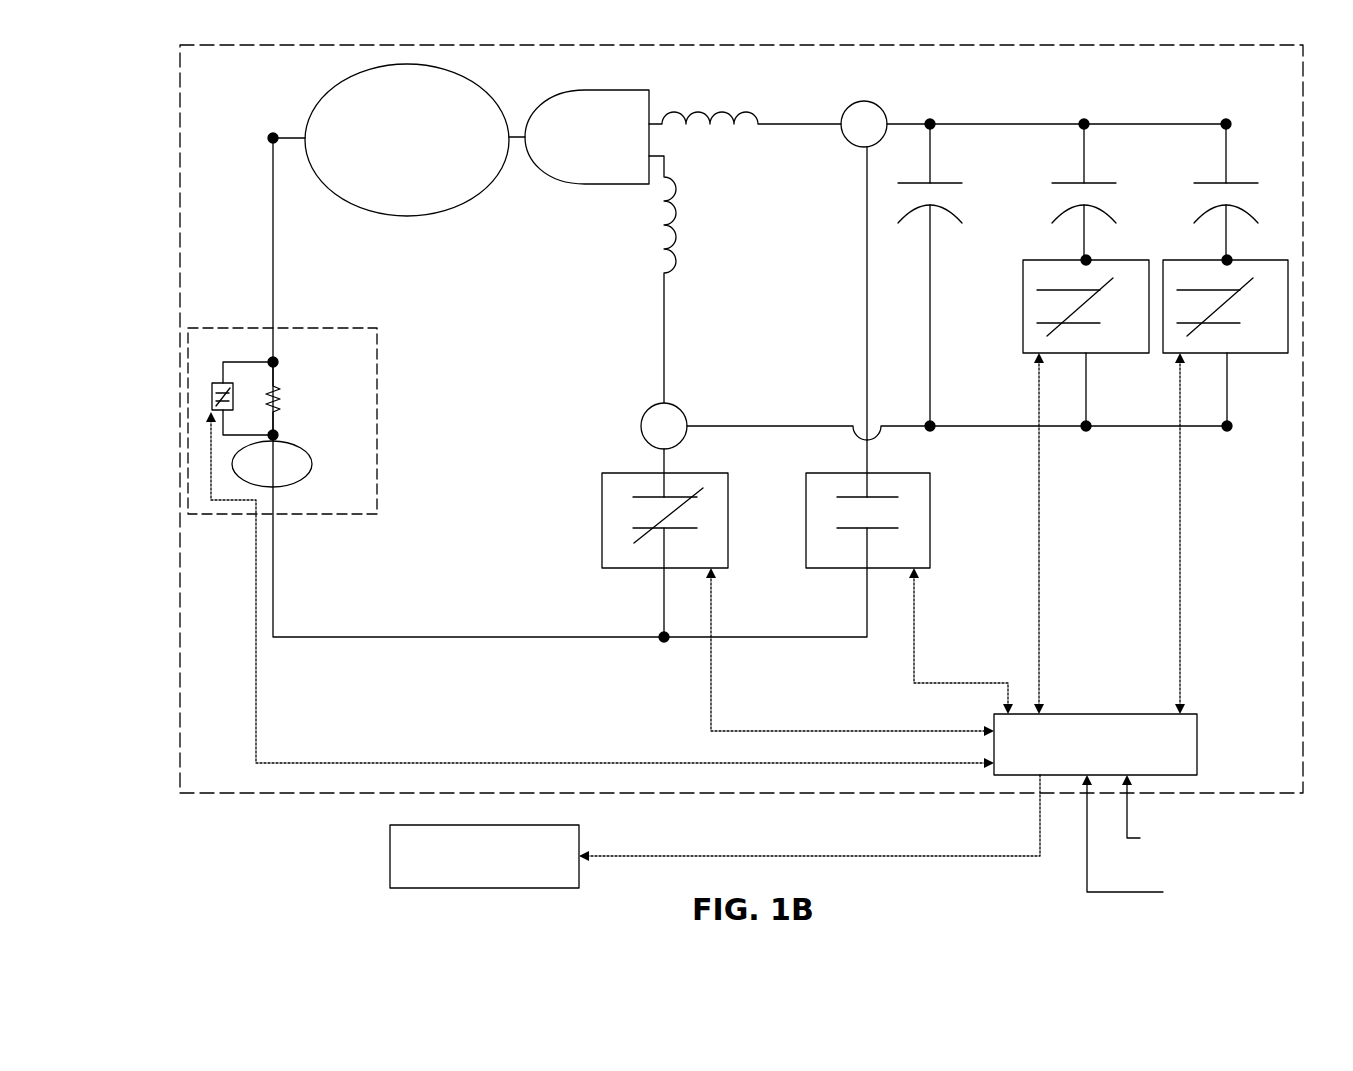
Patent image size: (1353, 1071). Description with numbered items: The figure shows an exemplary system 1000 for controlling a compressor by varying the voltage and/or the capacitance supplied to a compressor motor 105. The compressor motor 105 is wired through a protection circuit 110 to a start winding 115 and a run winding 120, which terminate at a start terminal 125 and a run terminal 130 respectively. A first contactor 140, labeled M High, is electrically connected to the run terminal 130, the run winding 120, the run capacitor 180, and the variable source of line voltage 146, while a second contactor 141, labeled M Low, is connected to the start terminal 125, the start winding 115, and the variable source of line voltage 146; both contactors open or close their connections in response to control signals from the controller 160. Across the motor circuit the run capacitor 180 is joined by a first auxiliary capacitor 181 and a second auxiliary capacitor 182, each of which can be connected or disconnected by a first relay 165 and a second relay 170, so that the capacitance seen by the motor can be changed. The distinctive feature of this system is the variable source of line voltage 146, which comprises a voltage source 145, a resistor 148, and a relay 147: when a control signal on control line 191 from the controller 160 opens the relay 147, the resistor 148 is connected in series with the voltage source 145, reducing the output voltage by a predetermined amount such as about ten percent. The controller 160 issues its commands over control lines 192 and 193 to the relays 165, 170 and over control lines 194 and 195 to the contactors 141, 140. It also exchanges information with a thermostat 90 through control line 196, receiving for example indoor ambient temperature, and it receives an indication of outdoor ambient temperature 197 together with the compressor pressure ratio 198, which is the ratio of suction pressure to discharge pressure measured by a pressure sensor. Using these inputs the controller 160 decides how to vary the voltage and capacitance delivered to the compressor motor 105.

The thermostat 90 is at (579, 840).
The compressor motor 105 is at (478, 86).
The protection circuit 110 is at (600, 90).
The start winding 115 is at (723, 128).
The run winding 120 is at (678, 225).
The start terminal 125 is at (876, 102).
The run terminal 130 is at (680, 408).
The first contactor 140 is at (688, 473).
The second contactor 141 is at (890, 473).
The voltage source 145 is at (312, 462).
The variable source of line voltage 146 is at (377, 393).
The relay 147 is at (210, 396).
The resistor 148 is at (280, 394).
The controller 160 is at (1197, 745).
The first relay 165 is at (1102, 353).
The second relay 170 is at (1250, 353).
The run capacitor 180 is at (950, 183).
The first auxiliary capacitor 181 is at (1105, 183).
The second auxiliary capacitor 182 is at (1245, 183).
The control line 191 is at (602, 763).
The control line 192 is at (1039, 650).
The control line 193 is at (1180, 596).
The control line 194 is at (914, 633).
The control line 195 is at (711, 668).
The control line 196 is at (870, 856).
The outdoor ambient temperature 197 is at (1127, 822).
The pressure ratio 198 is at (1115, 892).
The system 1000 is at (1303, 765).